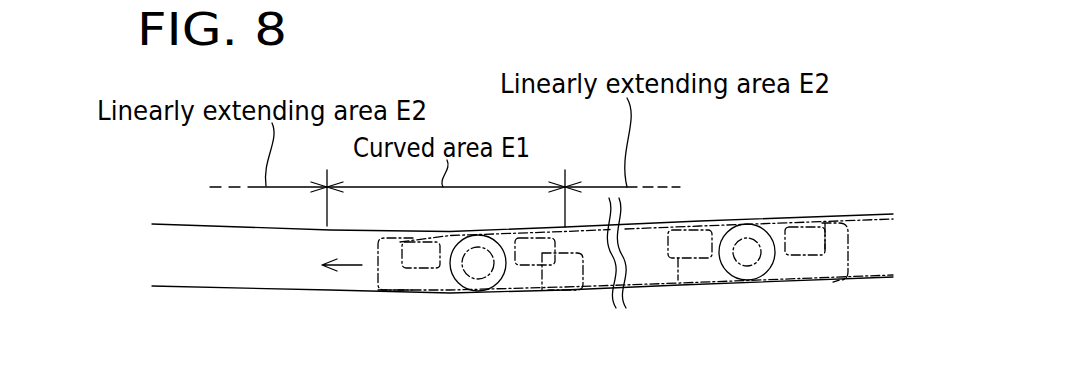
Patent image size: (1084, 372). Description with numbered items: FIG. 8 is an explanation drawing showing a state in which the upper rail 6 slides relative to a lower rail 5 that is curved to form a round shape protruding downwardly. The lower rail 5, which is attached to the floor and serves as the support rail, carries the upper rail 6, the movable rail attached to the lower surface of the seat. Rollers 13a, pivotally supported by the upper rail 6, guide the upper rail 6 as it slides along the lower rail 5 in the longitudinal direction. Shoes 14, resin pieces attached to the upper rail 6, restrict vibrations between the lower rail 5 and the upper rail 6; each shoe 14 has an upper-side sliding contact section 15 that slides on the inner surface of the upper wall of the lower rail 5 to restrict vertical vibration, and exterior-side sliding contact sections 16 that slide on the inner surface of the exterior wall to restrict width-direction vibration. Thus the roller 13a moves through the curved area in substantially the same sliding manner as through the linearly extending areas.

The lower rail 5 is at (167, 225).
The upper rail 6 is at (830, 221).
The roller 13a is at (508, 292).
The shoe 14 is at (585, 290).
The upper-side sliding contact section 15 is at (445, 231).
The exterior-side sliding contact section 16 is at (413, 292).